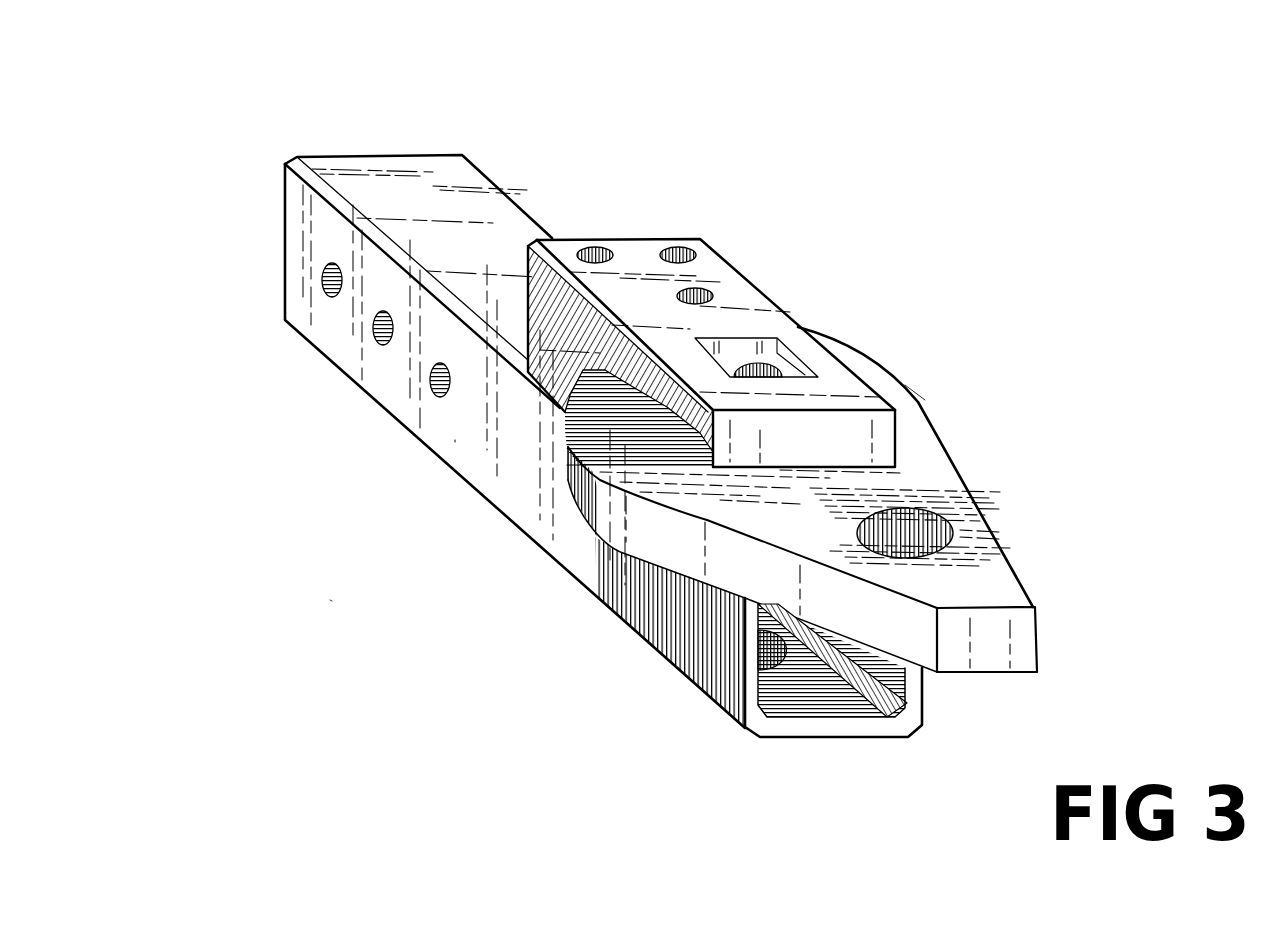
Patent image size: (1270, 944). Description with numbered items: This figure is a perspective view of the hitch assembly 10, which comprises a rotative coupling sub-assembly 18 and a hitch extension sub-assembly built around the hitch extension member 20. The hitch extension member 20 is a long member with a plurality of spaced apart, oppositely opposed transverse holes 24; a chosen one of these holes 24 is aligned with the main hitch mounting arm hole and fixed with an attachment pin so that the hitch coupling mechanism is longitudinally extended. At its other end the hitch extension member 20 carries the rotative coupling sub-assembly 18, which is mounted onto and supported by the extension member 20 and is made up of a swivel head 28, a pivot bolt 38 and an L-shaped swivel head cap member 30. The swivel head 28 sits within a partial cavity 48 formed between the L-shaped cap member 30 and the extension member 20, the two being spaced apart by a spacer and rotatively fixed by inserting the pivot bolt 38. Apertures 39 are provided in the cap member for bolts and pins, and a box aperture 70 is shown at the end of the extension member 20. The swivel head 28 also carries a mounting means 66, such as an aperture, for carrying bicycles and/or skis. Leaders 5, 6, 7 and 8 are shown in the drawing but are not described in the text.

The hitch assembly 10 is at (1027, 188).
The longitudinal axis of tube 5 is at (316, 636).
The upper mounting plate assembly 6 is at (772, 260).
The lower base plate assembly 7 is at (1077, 593).
The junction between plates 8 is at (935, 373).
The rotative coupling sub-assembly 18 is at (603, 455).
The hitch extension member 20 is at (462, 438).
The transverse holes 24 is at (447, 378).
The swivel head 28 is at (940, 472).
The L-shaped swivel head cap member 30 is at (768, 312).
The pivot bolt 38 is at (798, 366).
The apertures 39 is at (715, 292).
The partial cavity 48 is at (482, 462).
The mounting means 66 is at (933, 532).
The box aperture 70 is at (832, 703).